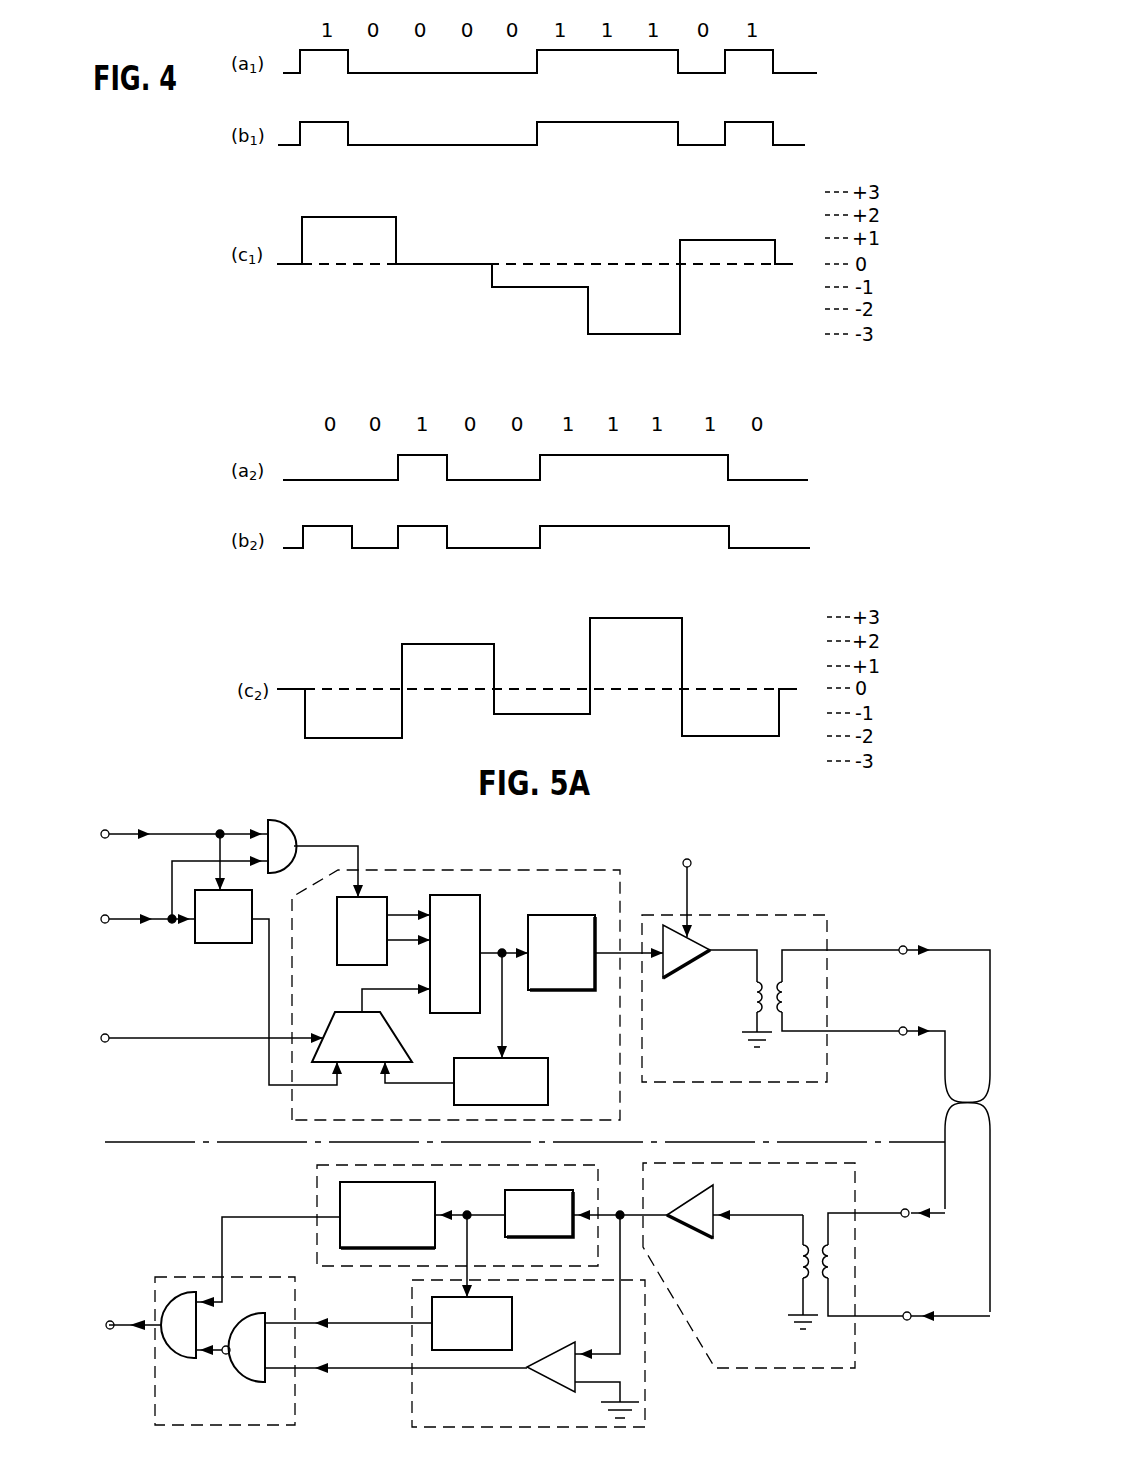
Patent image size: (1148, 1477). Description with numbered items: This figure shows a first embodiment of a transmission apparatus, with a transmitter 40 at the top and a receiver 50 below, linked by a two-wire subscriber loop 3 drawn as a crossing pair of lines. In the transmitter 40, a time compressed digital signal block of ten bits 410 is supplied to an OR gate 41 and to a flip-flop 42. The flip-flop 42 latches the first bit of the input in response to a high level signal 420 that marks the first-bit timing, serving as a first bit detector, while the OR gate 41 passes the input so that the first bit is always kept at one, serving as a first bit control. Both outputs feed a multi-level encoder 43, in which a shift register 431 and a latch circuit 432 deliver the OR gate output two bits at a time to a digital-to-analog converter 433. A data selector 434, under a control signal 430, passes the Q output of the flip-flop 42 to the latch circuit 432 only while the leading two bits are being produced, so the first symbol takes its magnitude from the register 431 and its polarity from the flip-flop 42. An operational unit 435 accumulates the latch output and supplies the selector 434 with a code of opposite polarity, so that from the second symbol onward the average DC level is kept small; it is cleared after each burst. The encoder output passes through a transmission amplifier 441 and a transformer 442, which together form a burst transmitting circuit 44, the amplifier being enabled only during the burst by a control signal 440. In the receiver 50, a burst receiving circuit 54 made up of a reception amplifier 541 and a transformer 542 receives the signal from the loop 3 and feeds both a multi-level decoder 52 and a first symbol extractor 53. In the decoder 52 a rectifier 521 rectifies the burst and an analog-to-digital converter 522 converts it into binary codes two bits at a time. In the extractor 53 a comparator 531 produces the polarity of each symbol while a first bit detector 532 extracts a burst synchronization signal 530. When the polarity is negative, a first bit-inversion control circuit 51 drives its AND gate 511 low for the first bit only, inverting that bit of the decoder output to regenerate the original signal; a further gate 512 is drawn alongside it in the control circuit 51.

The two-wire subscriber loop 3 is at (955, 1101).
The transmitter 40 is at (158, 1077).
The OR gate 41 is at (293, 843).
The time compressed digital signal block 410 is at (122, 846).
The flip-flop 42 is at (204, 945).
The high level signal 420 is at (118, 923).
The multi-level encoder 43 is at (502, 867).
The control signal 430 is at (183, 1041).
The shift register 431 is at (336, 928).
The latch circuit 432 is at (481, 907).
The digital-to-analog converter 433 is at (560, 992).
The data selector 434 is at (336, 1022).
The operational unit 435 is at (549, 1084).
The burst transmitting circuit 44 is at (757, 912).
The control signal 440 is at (690, 900).
The transmission amplifier 441 is at (683, 980).
The transformer 442 is at (777, 1032).
The receiver 50 is at (150, 1272).
The first bit-inversion control circuit 51 is at (228, 1428).
The AND gate 511 is at (248, 1384).
The AND gate 512 is at (186, 1360).
The multi-level decoder 52 is at (312, 1195).
The rectifier 521 is at (549, 1191).
The analog-to-digital converter 522 is at (436, 1191).
The first symbol extractor 53 is at (648, 1407).
The burst synchronization signal 530 is at (350, 1318).
The comparator 531 is at (536, 1378).
The first bit detector 532 is at (513, 1320).
The burst receiving circuit 54 is at (756, 1372).
The reception amplifier 541 is at (730, 1191).
The transformer 542 is at (820, 1213).